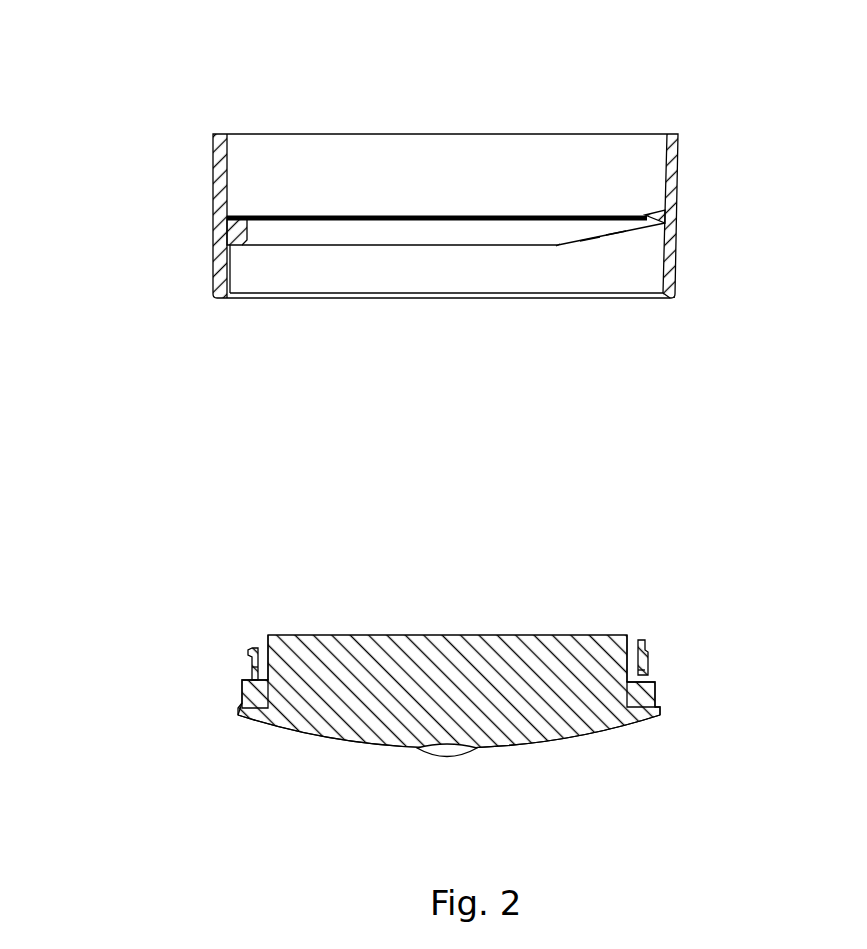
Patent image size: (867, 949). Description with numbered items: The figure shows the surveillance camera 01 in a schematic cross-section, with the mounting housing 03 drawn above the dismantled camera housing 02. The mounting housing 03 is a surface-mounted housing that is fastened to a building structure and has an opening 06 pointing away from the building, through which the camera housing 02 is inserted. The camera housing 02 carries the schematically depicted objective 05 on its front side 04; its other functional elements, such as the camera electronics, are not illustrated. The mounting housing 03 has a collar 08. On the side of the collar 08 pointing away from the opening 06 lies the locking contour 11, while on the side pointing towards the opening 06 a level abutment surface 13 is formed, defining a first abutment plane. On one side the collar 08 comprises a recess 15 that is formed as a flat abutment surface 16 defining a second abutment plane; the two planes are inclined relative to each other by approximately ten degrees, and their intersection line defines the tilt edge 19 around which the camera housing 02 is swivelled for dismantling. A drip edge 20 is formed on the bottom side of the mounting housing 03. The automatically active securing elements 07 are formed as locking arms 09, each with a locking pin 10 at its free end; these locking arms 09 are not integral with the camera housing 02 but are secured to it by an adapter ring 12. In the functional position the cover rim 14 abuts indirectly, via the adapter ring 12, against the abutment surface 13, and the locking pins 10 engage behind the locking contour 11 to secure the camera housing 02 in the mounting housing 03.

The surveillance camera 01 is at (91, 105).
The camera housing 02 is at (577, 727).
The mounting housing 03 is at (560, 148).
The front side 04 is at (313, 739).
The objective 05 is at (452, 752).
The opening 06 is at (440, 273).
The securing elements 07 is at (232, 660).
The collar 08 is at (384, 232).
The locking arms 09 is at (252, 668).
The locking pin 10 is at (252, 650).
The locking contour 11 is at (418, 213).
The adapter ring 12 is at (246, 697).
The abutment surface 13 is at (323, 245).
The cover rim 14 is at (241, 714).
The recess 15 is at (613, 242).
The abutment surface 16 is at (586, 242).
The tilt edge 19 is at (559, 247).
The drip edge 20 is at (668, 300).